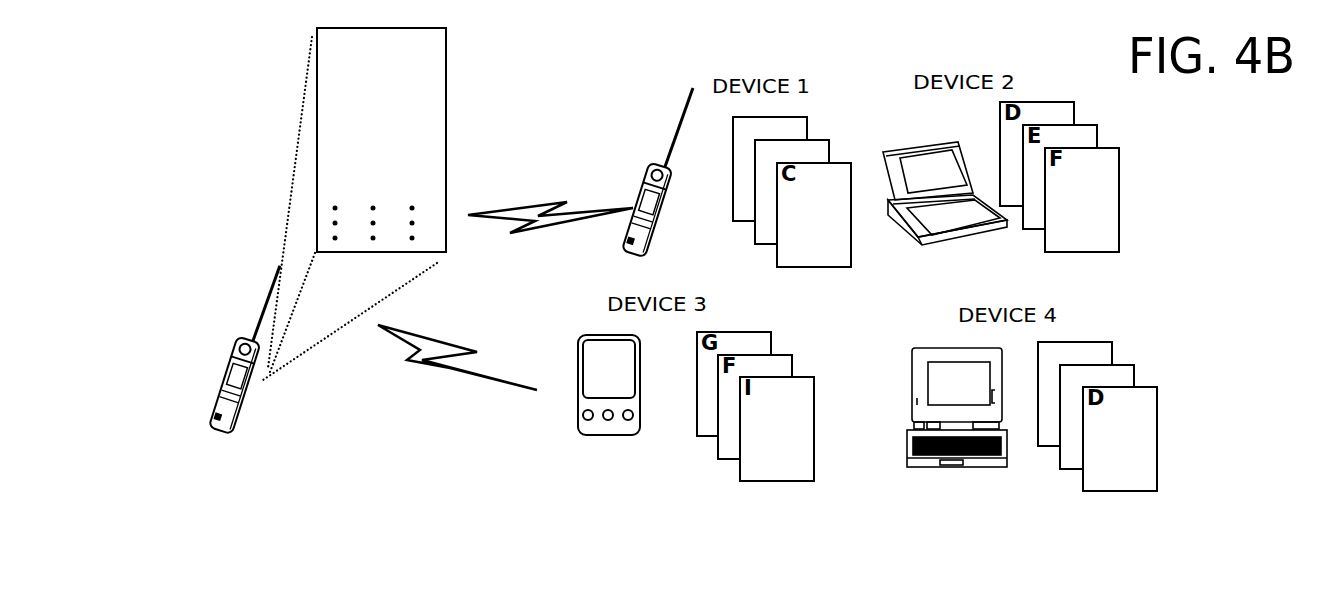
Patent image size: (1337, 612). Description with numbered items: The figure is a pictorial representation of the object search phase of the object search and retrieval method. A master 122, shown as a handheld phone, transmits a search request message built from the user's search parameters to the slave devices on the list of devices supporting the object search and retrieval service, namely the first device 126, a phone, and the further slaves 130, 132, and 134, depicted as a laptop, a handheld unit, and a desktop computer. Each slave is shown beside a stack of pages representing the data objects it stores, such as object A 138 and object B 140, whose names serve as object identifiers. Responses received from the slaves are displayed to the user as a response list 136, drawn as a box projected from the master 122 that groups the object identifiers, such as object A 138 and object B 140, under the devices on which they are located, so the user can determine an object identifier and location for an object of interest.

The master 122 is at (250, 403).
The first device 126 is at (660, 230).
The slave 130 is at (925, 242).
The slave 132 is at (578, 428).
The slave 134 is at (920, 463).
The response list 136 is at (445, 88).
The object A 138 is at (802, 115).
The object B 140 is at (828, 150).